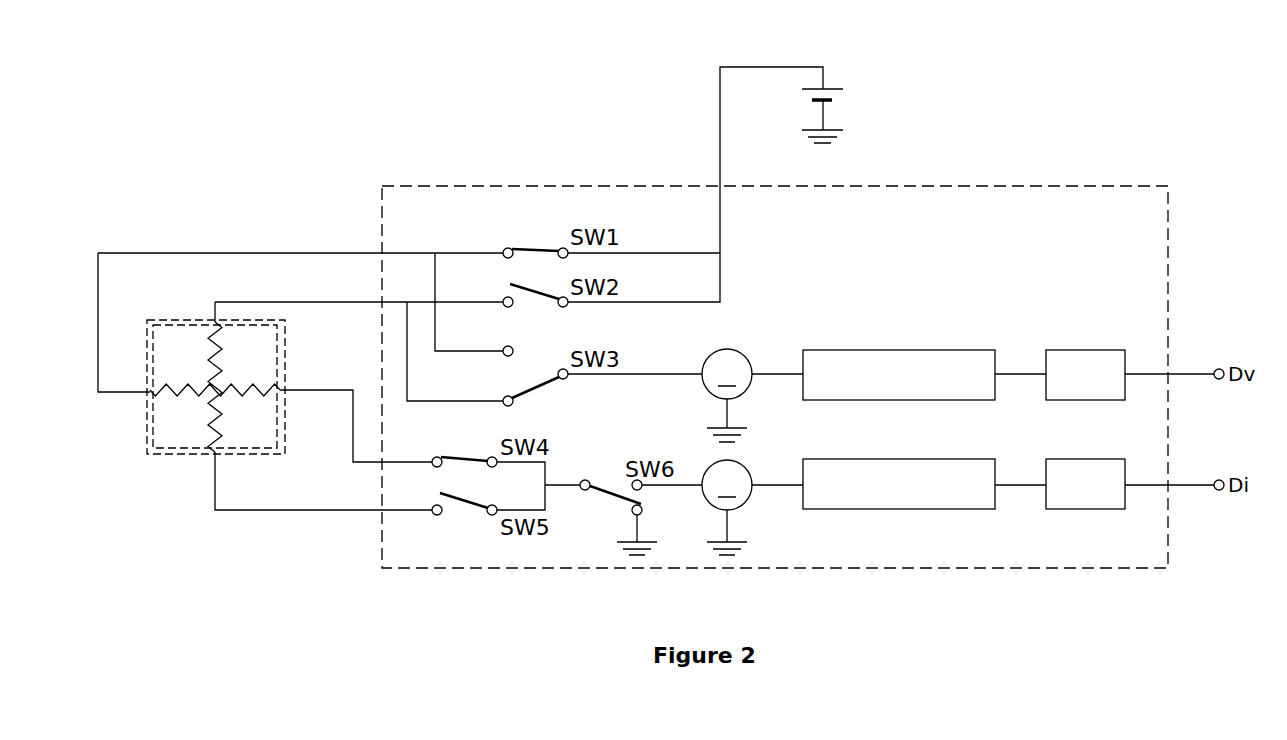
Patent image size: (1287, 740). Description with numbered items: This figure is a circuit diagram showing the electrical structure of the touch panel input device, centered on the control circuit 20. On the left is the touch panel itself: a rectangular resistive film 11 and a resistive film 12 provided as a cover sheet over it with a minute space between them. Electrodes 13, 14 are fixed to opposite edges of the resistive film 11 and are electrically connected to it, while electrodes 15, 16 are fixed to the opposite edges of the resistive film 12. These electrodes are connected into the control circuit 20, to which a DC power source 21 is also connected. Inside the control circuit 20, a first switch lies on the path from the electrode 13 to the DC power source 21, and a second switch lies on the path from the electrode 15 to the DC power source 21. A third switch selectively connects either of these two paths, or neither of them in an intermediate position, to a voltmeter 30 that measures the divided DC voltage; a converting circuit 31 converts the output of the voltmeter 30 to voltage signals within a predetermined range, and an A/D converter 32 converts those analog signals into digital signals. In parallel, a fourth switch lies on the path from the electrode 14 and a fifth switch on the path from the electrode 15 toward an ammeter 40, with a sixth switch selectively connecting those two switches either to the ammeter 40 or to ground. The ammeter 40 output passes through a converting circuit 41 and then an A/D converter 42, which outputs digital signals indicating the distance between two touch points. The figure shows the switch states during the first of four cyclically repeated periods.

The resistive film 11 is at (219, 405).
The resistive film 12 is at (219, 388).
The electrode 13 is at (147, 432).
The electrode 14 is at (285, 345).
The electrode 15 is at (178, 318).
The electrode 16 is at (173, 437).
The control circuit 20 is at (1121, 185).
The DC power source 21 is at (866, 92).
The voltmeter 30 is at (748, 357).
The converting circuit 31 is at (978, 349).
The A/D converter 32 is at (1106, 349).
The ammeter 40 is at (748, 468).
The converting circuit 41 is at (978, 459).
The A/D converter 42 is at (1106, 459).